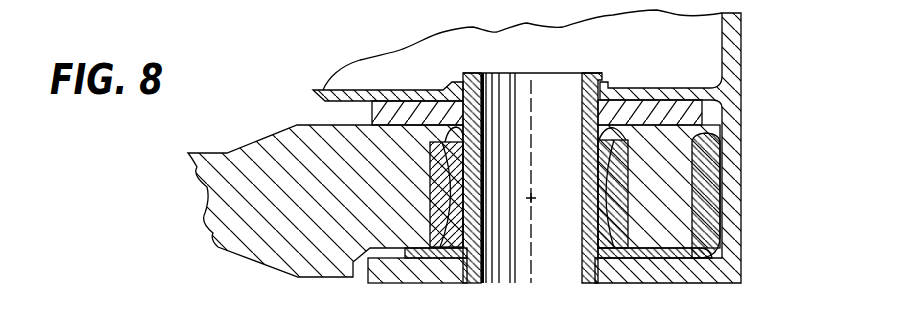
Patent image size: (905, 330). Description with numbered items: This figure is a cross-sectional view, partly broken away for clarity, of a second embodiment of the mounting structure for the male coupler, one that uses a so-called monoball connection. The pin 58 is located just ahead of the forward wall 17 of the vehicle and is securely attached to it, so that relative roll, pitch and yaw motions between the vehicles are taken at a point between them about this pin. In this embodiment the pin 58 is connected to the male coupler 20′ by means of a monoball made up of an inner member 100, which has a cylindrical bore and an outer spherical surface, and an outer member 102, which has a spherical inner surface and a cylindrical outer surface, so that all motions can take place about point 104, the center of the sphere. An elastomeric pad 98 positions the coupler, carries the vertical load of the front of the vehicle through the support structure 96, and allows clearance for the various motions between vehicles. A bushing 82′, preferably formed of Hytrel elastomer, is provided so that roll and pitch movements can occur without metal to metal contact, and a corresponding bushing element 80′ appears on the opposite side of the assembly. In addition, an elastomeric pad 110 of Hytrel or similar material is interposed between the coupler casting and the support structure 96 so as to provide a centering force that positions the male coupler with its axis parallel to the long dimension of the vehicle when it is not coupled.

The forward wall 17 is at (742, 44).
The male coupler 20′ is at (251, 143).
The pin 58 is at (587, 73).
The lower bearing plate 80′ is at (424, 256).
The bushing 82′ is at (628, 258).
The support structure 96 is at (733, 141).
The elastomeric pad 98 is at (372, 113).
The inner member 100 is at (461, 176).
The outer member 102 is at (447, 229).
The point 104 is at (537, 193).
The elastomeric pad 110 is at (710, 225).